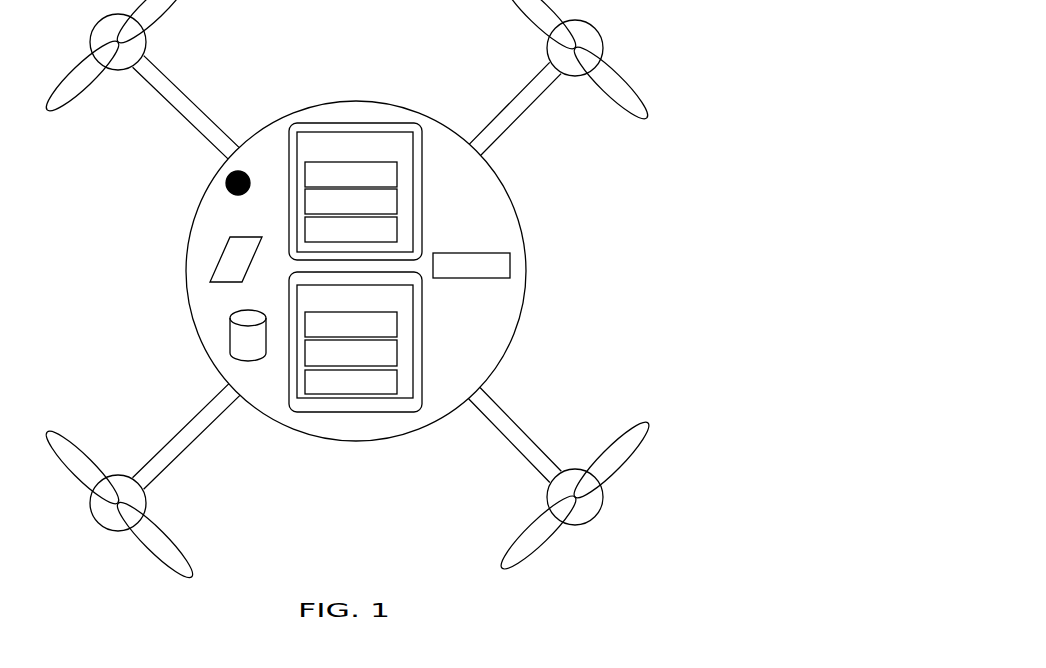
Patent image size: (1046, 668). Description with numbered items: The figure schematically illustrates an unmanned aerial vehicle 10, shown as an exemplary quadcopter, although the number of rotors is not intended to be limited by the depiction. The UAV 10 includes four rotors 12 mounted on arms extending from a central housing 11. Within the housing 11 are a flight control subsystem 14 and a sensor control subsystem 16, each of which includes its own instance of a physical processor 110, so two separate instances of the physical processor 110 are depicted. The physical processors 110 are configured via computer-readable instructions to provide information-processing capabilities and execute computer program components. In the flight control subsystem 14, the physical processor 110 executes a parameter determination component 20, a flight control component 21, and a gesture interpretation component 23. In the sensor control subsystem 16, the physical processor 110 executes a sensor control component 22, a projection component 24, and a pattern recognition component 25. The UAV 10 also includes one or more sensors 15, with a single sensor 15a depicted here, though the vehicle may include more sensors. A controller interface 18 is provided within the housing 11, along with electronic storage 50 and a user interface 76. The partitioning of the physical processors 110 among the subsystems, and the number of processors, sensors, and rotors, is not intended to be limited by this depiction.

The unmanned aerial vehicle 10 is at (646, 552).
The housing 11 is at (192, 312).
The rotors 12 is at (613, 456).
The flight control subsystem 14 is at (303, 120).
The sensor 15 is at (174, 180).
The sensor 15a is at (226, 183).
The sensor control subsystem 16 is at (300, 412).
The controller interface 18 is at (522, 265).
The parameter determination component 20 is at (409, 175).
The flight control component 21 is at (409, 202).
The sensor control component 22 is at (409, 326).
The gesture interpretation component 23 is at (409, 228).
The projection component 24 is at (409, 355).
The pattern recognition component 25 is at (409, 383).
The electronic storage 50 is at (230, 337).
The user interface 76 is at (222, 255).
The physical processor 110 is at (388, 132).